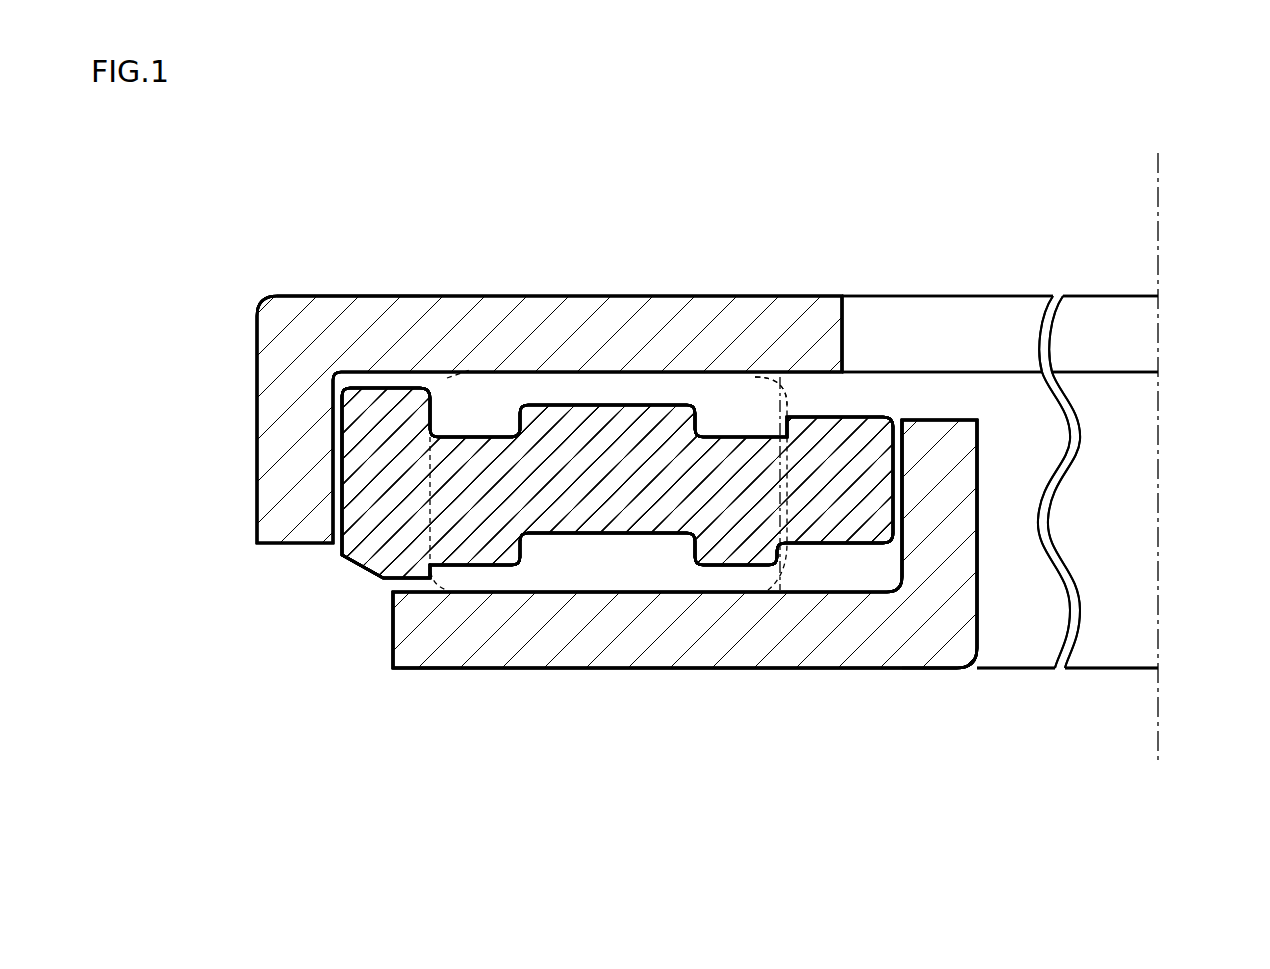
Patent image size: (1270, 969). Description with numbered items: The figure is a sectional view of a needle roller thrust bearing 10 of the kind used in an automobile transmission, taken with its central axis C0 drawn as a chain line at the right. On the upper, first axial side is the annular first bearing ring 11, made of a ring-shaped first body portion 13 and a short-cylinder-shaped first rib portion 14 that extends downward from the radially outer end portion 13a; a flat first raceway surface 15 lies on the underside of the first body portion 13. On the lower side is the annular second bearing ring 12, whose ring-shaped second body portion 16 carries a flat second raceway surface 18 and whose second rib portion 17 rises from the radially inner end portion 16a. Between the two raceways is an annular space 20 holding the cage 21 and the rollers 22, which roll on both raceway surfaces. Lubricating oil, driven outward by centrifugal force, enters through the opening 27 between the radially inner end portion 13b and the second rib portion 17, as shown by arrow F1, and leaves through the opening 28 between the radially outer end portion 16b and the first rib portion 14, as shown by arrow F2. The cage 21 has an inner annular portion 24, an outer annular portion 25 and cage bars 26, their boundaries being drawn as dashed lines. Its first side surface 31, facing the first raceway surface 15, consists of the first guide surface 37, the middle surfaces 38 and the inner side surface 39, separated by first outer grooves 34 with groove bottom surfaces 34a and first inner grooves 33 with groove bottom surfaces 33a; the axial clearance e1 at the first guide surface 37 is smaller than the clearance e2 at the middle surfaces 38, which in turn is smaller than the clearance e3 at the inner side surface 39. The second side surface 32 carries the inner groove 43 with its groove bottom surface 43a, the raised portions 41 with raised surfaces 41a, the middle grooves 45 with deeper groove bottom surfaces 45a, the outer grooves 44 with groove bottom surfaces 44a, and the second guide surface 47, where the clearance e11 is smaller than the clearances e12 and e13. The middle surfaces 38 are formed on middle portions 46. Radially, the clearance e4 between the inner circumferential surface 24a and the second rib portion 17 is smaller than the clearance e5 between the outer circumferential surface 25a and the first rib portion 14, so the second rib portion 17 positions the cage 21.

The needle roller thrust bearing 10 is at (245, 499).
The first bearing ring 11 is at (653, 296).
The second bearing ring 12 is at (740, 668).
The first body portion 13 is at (600, 325).
The radially outer end portion of first body portion 13a is at (292, 296).
The radially inner end portion of first bearing ring 13b is at (842, 296).
The first rib portion 14 is at (290, 404).
The first raceway surface 15 is at (662, 423).
The second body portion 16 is at (620, 640).
The radially inner end portion of second body portion 16a is at (943, 668).
The radially outer end portion of second bearing ring 16b is at (400, 668).
The second rib portion 17 is at (940, 575).
The second raceway surface 18 is at (672, 585).
The annular space 20 is at (328, 539).
The cage 21 is at (357, 372).
The rollers 22 is at (449, 590).
The inner annular portion 24 is at (863, 480).
The inner circumferential surface 24a is at (893, 452).
The outer annular portion 25 is at (360, 482).
The outer circumferential surface 25a is at (340, 432).
The cage bar 26 is at (724, 425).
The opening 27 is at (879, 333).
The opening 28 is at (362, 616).
The first side surface 31 is at (540, 400).
The second side surface 32 is at (505, 600).
The first inner grooves 33 is at (750, 437).
The groove bottom surfaces of inner grooves 33a is at (755, 377).
The first outer grooves 34 is at (463, 426).
The groove bottom surfaces of outer grooves 34a is at (488, 437).
The first guide surface 37 is at (405, 388).
The middle surfaces 38 is at (620, 405).
The inner side surface 39 is at (863, 417).
The raised portions 41 is at (716, 578).
The raised surfaces 41a is at (757, 567).
The inner groove 43 is at (867, 559).
The groove bottom surface of inner groove 43a is at (810, 547).
The outer grooves 44 is at (442, 578).
The groove bottom surfaces of outer grooves 44a is at (500, 576).
The middle grooves 45 is at (552, 546).
The groove bottom surfaces of middle grooves 45a is at (590, 533).
The middle portions 46 is at (632, 420).
The second guide surface 47 is at (385, 583).
The central axis C0 is at (1158, 205).
The arrow indicating inflow of lubricating oil F1 is at (870, 390).
The arrow indicating outflow of lubricating oil F2 is at (345, 585).
The axial clearance e1 is at (379, 400).
The axial clearance e2 is at (577, 417).
The axial clearance e3 is at (807, 429).
The clearance e4 is at (914, 512).
The clearance e5 is at (290, 457).
The axial clearance e11 is at (411, 604).
The axial clearance e12 is at (491, 604).
The axial clearance e13 is at (742, 604).